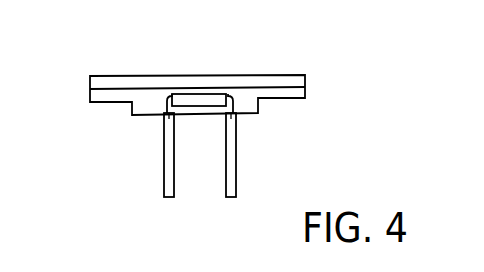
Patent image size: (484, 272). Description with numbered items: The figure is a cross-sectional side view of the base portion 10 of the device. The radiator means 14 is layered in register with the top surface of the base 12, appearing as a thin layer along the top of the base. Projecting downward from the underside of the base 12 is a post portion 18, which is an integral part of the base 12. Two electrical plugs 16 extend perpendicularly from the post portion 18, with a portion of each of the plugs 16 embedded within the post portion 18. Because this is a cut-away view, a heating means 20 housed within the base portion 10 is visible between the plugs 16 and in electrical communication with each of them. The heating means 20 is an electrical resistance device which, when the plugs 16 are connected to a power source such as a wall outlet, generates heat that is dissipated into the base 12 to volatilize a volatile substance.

The base portion 10 is at (290, 46).
The base 12 is at (89, 91).
The radiator means 14 is at (89, 83).
The electrical plugs 16 is at (163, 188).
The post portion 18 is at (131, 108).
The heating means 20 is at (200, 100).